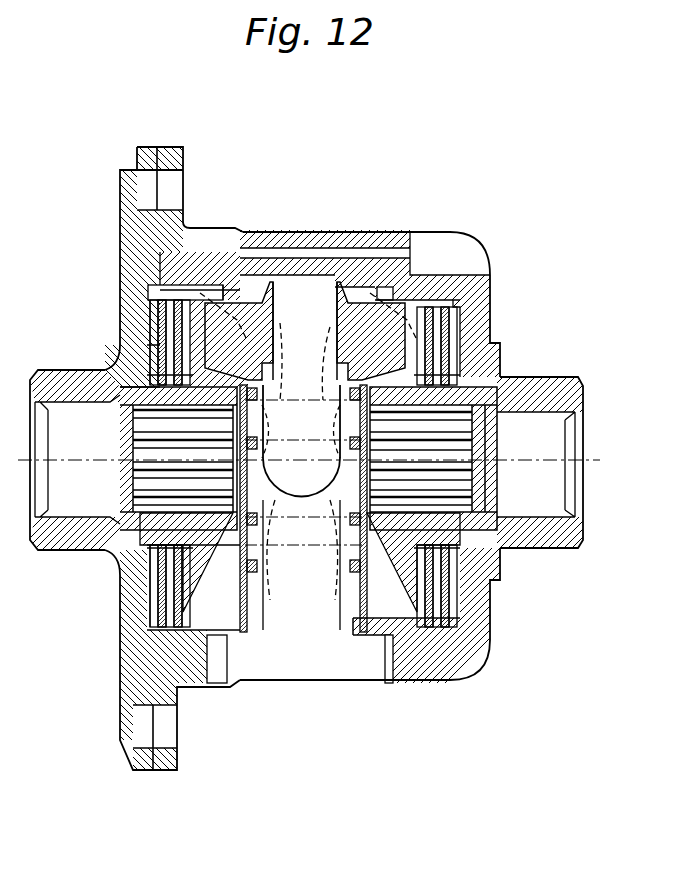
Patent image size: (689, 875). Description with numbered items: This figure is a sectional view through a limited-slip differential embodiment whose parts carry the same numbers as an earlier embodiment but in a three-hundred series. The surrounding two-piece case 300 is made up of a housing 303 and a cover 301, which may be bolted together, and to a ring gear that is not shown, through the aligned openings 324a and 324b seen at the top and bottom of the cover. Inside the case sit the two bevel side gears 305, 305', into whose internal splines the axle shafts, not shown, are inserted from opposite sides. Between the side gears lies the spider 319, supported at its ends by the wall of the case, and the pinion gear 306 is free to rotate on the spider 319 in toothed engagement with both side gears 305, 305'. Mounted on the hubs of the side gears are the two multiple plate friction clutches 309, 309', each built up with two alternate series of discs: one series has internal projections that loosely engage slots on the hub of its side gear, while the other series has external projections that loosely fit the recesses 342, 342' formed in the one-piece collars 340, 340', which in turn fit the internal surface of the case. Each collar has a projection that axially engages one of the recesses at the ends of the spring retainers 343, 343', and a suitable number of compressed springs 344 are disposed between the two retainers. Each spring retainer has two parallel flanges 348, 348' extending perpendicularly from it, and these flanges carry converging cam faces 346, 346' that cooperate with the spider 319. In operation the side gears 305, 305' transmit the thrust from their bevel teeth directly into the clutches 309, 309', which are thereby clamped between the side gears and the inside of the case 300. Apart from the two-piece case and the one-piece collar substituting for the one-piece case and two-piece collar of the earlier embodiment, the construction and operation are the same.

The two-piece case 300 is at (407, 240).
The cover 301 is at (130, 278).
The housing 303 is at (478, 285).
The side gear 305 is at (72, 443).
The side gear 305' is at (540, 482).
The pinion gear 306 is at (278, 280).
The multiple plate friction clutch 309 is at (127, 414).
The multiple plate friction clutch 309' is at (470, 437).
The spider 319 is at (322, 280).
The opening 324a is at (137, 172).
The opening 324b is at (185, 180).
The one-piece collar 340 is at (211, 631).
The one-piece collar 340' is at (426, 626).
The recess 342 is at (203, 714).
The recess 342' is at (370, 640).
The spring retainer 343 is at (268, 551).
The spring retainer 343' is at (340, 551).
The compressed springs 344 is at (300, 395).
The cam face 346 is at (285, 461).
The cam face 346' is at (327, 467).
The flange 348 is at (113, 463).
The flange 348' is at (484, 466).